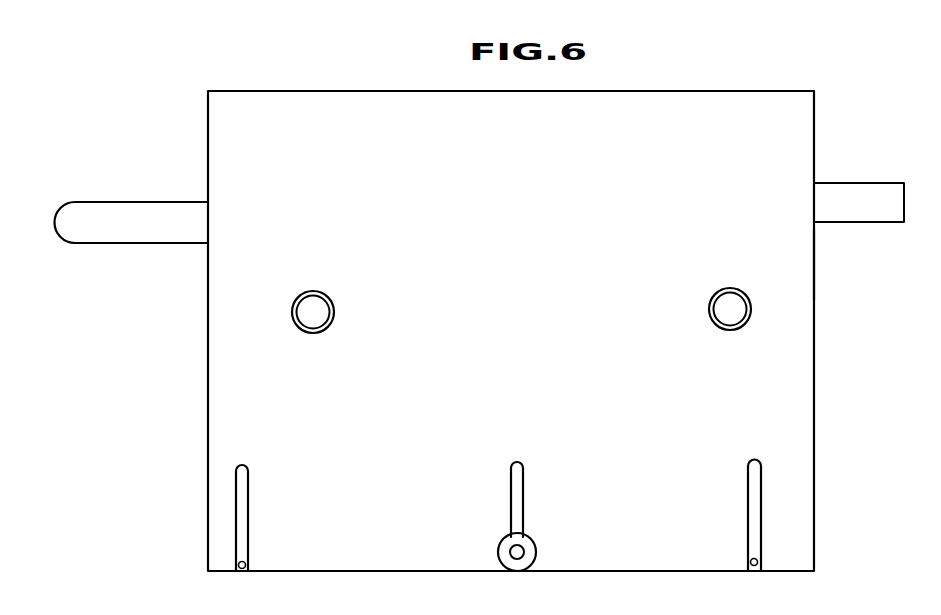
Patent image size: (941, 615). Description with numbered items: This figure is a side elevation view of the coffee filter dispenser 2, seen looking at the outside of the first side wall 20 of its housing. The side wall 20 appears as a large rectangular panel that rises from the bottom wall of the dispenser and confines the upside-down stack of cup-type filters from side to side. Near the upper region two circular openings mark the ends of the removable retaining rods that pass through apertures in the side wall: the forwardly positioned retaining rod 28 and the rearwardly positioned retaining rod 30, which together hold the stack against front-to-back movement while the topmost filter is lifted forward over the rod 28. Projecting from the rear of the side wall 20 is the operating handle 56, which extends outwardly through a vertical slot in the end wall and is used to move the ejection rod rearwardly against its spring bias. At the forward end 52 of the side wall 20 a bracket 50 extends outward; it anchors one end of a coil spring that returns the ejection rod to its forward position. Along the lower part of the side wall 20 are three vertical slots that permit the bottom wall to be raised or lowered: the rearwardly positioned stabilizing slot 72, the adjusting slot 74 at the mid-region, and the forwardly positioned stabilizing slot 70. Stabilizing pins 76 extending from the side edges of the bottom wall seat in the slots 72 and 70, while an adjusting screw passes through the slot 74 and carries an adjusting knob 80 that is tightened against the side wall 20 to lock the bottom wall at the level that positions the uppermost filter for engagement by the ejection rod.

The coffee filter dispenser 2 is at (823, 346).
The first side wall 20 is at (323, 96).
The operating handle 56 is at (140, 201).
The bracket 50 is at (876, 182).
The forward end of side wall 52 is at (814, 263).
The rearwardly positioned removable retaining rod 30 is at (313, 302).
The forwardly positioned removable retaining rod 28 is at (731, 302).
The rearwardly positioned stabilizing slot 72 is at (236, 484).
The adjusting slot 74 is at (523, 478).
The forwardly positioned stabilizing slot 70 is at (755, 497).
The adjusting knob 80 is at (500, 540).
The stabilizing pin 76 is at (242, 573).